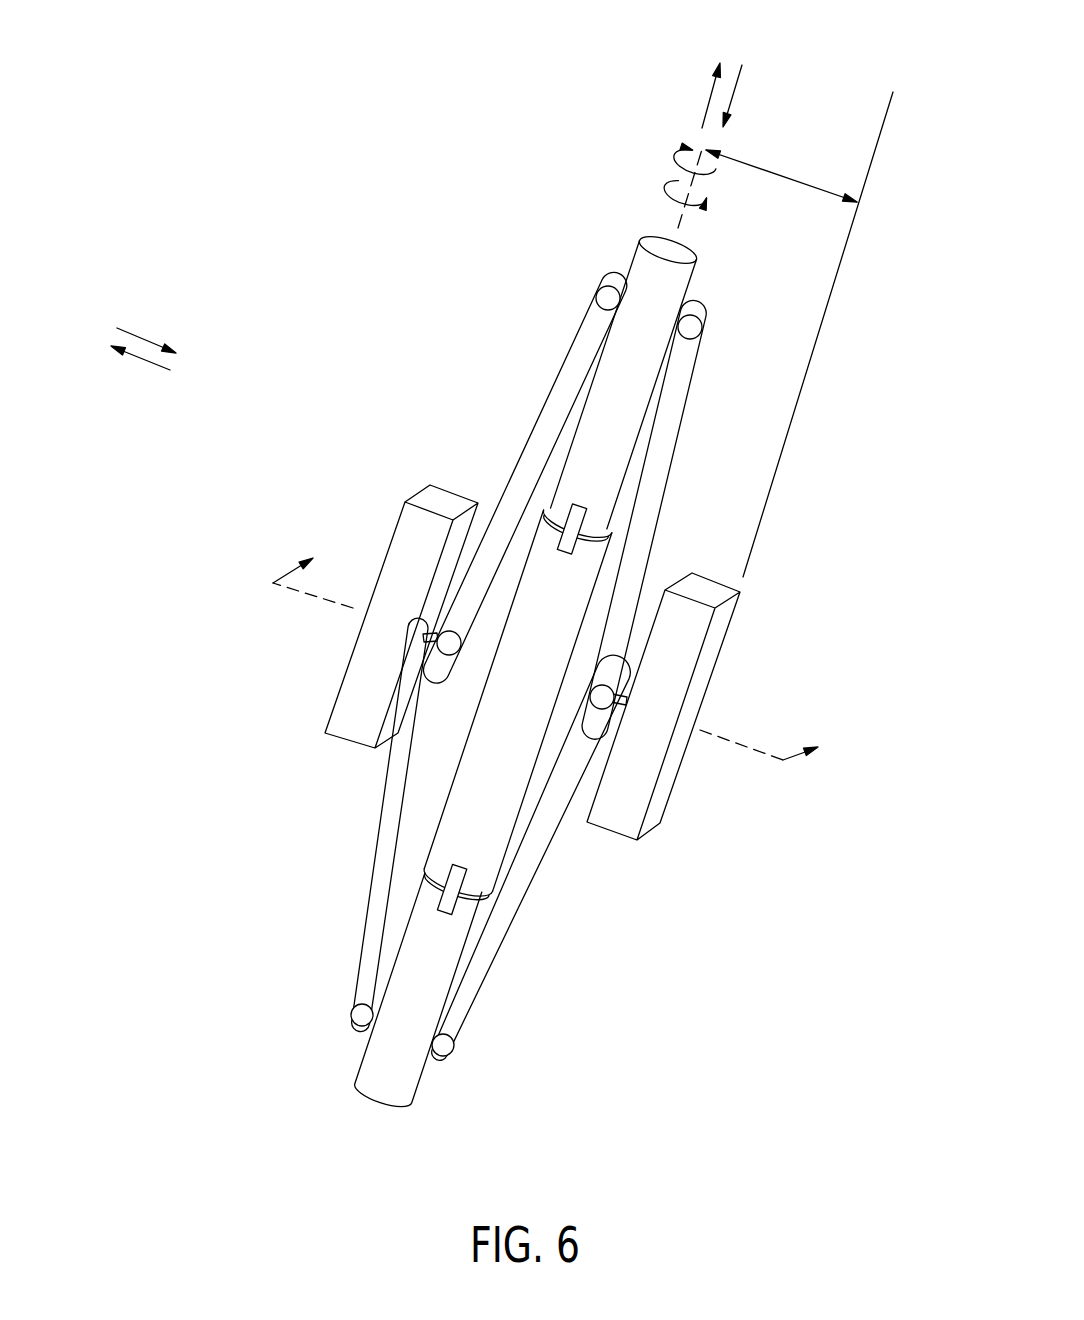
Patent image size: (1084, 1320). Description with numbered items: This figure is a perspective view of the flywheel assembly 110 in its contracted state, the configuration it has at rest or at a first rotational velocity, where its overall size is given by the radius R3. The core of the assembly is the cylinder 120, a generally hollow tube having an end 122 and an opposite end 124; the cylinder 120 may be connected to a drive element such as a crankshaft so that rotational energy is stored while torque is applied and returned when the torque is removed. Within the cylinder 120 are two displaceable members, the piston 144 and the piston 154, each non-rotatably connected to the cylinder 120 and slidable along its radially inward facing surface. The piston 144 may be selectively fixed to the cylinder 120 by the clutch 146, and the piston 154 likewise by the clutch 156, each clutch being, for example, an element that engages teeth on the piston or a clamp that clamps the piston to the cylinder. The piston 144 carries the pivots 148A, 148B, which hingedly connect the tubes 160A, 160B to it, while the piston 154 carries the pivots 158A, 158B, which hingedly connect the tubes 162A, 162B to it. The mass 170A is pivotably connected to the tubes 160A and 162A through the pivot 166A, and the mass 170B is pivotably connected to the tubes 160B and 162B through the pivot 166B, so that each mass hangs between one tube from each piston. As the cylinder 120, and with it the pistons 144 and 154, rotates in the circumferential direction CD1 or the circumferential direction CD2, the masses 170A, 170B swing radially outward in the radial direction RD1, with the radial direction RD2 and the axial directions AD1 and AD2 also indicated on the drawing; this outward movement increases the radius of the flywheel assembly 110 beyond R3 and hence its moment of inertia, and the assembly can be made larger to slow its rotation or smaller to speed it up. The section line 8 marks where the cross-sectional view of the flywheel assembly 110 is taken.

The flywheel assembly 110 is at (276, 168).
The cylinder 120 is at (570, 584).
The end 122 is at (550, 520).
The end 124 is at (477, 914).
The piston 144 is at (676, 288).
The clutch 146 is at (582, 521).
The pivot 148A is at (600, 296).
The pivot 148B is at (702, 328).
The piston 154 is at (388, 1100).
The clutch 156 is at (453, 879).
The pivot 158A is at (362, 1016).
The pivot 158B is at (445, 1045).
The tube 160A is at (570, 374).
The tube 160B is at (672, 428).
The tube 162A is at (400, 841).
The tube 162B is at (473, 971).
The pivot 166A is at (450, 640).
The pivot 166B is at (607, 690).
The mass 170A is at (358, 688).
The mass 170B is at (690, 718).
The line 8- 8 is at (554, 647).
The first axial direction AD1 is at (712, 85).
The second axial direction AD2 is at (737, 87).
The circumferential direction CD1 is at (677, 163).
The circumferential direction CD2 is at (707, 203).
The radius R3 is at (820, 183).
The radial direction RD1 is at (153, 362).
The second radial direction RD2 is at (153, 340).